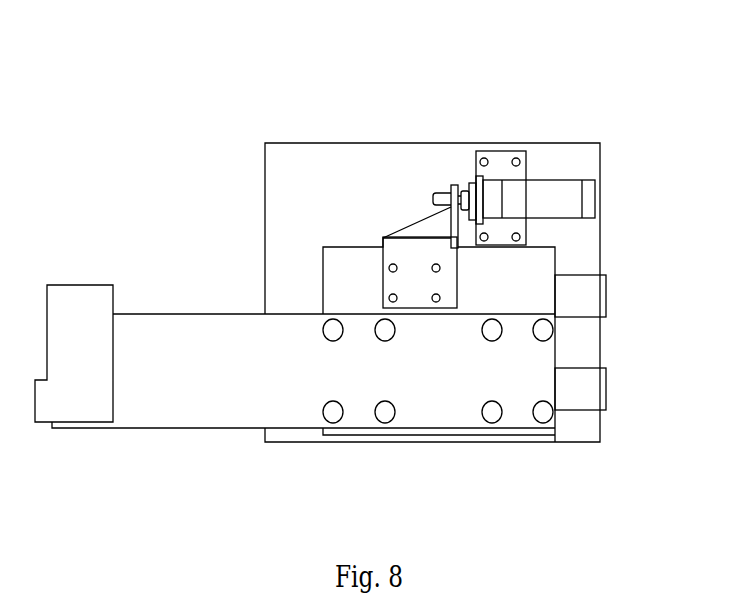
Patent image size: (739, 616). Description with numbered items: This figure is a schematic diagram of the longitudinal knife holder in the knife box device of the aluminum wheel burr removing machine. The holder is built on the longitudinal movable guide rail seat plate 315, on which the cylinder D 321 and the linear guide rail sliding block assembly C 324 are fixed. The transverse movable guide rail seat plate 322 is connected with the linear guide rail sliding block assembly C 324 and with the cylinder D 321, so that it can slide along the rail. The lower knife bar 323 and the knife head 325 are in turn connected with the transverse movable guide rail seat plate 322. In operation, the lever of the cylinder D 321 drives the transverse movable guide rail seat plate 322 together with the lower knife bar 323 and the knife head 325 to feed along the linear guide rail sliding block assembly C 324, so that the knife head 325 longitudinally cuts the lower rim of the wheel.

The longitudinal movable guide rail seat plate 315 is at (553, 155).
The cylinder D 321 is at (553, 204).
The transverse movable guide rail seat plate 322 is at (543, 278).
The lower knife bar 323 is at (543, 362).
The linear guide rail sliding block assembly C 324 is at (580, 392).
The knife head 325 is at (81, 303).